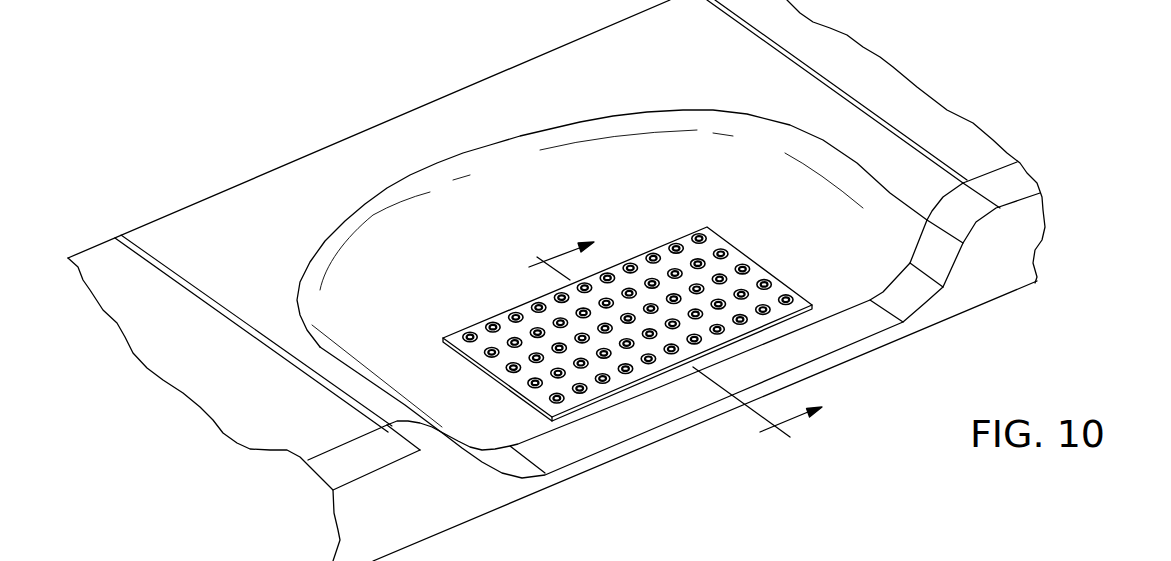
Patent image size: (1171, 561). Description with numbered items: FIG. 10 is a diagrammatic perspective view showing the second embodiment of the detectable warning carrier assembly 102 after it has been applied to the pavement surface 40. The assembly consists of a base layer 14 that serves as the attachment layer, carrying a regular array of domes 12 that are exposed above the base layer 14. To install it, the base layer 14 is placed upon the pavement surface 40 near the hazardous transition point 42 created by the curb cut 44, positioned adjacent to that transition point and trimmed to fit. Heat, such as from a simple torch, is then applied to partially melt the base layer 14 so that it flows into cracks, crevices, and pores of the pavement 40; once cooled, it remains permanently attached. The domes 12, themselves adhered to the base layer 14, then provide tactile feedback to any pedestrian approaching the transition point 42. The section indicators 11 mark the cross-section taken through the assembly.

The section line 11- 11 is at (665, 345).
The domes 12 is at (690, 240).
The base layer 14 is at (735, 258).
The pavement surface 40 is at (853, 268).
The hazardous transition point 42 is at (600, 465).
The curb cut 44 is at (842, 333).
The detectable warning carrier assembly 102 is at (737, 222).